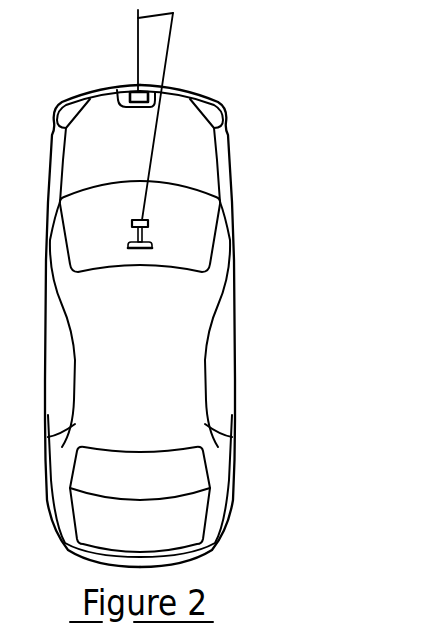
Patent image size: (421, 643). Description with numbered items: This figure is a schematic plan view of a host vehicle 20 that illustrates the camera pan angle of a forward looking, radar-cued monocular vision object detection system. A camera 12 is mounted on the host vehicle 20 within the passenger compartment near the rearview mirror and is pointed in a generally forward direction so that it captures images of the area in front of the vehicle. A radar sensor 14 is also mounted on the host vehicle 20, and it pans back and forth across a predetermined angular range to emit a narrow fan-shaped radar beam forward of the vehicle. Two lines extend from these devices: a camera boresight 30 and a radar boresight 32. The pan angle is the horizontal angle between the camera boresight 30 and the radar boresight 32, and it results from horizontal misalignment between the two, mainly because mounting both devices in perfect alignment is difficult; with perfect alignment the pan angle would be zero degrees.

The camera 12 is at (148, 223).
The radar sensor 14 is at (118, 89).
The host vehicle 20 is at (233, 335).
The camera boresight 30 is at (168, 50).
The radar boresight 32 is at (137, 55).